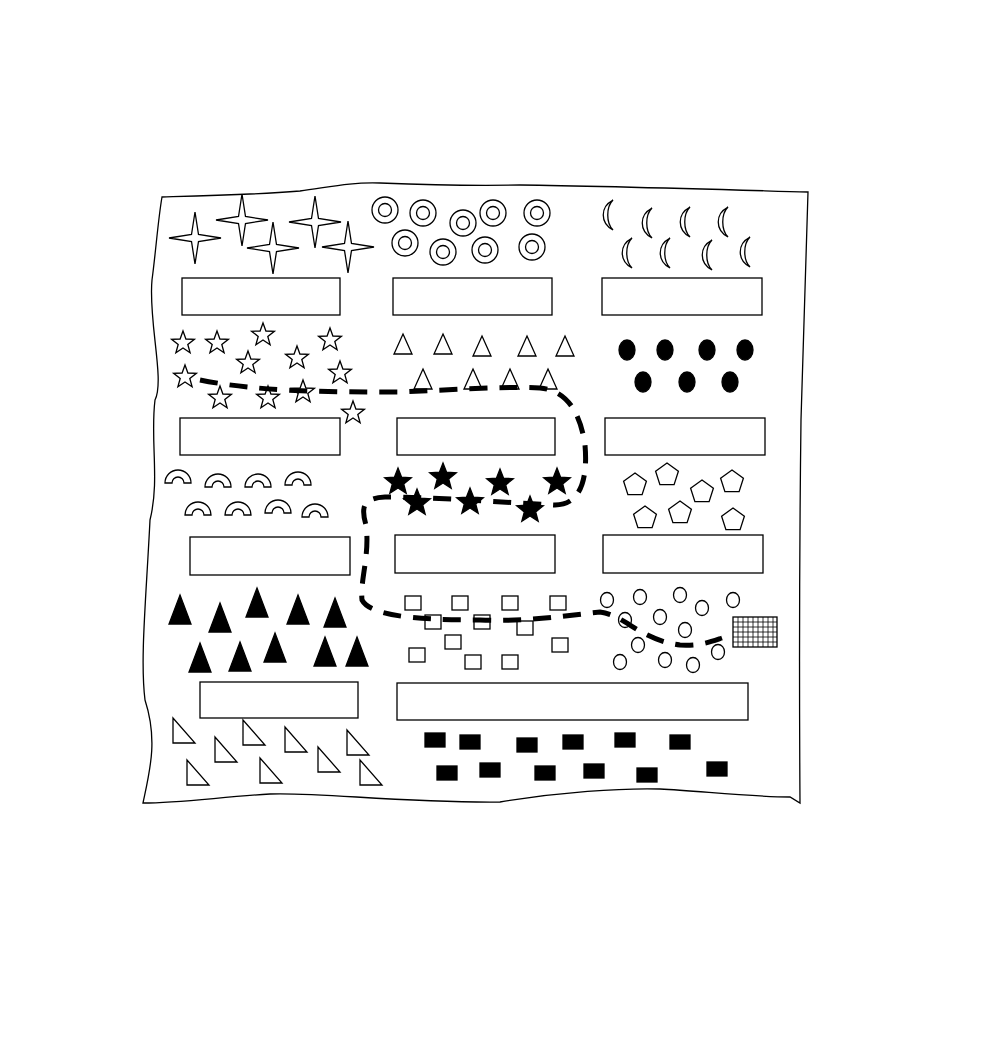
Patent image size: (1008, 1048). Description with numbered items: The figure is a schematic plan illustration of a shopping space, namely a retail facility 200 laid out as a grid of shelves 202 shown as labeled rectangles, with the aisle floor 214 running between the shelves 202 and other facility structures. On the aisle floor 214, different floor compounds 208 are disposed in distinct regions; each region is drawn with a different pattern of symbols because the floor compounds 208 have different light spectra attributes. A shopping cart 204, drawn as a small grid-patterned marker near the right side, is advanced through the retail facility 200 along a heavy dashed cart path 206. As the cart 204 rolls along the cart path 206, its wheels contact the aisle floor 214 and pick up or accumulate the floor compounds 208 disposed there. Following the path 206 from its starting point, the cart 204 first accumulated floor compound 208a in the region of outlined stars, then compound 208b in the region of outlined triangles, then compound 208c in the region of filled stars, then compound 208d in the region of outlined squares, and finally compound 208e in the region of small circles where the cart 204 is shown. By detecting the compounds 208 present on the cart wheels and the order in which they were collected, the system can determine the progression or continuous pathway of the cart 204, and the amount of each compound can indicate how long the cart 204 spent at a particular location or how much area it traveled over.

The retail facility 200 is at (686, 869).
The shelves 202 is at (472, 499).
The shopping cart 204 is at (777, 633).
The cart path 206 is at (205, 385).
The floor compounds 208 is at (690, 222).
The floor compound 208a is at (183, 332).
The floor compound 208b is at (398, 342).
The floor compound 208c is at (567, 480).
The floor compound 208d is at (417, 663).
The floor compound 208e is at (723, 657).
The aisle floor 214 is at (779, 269).